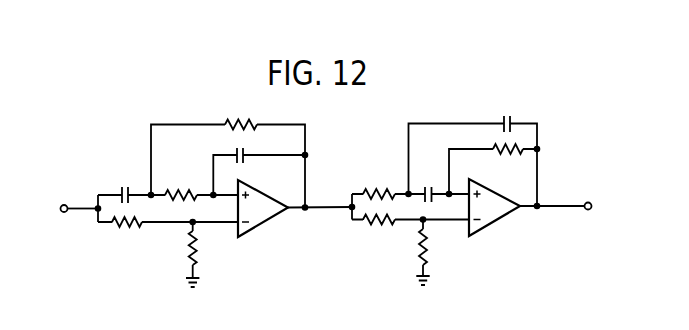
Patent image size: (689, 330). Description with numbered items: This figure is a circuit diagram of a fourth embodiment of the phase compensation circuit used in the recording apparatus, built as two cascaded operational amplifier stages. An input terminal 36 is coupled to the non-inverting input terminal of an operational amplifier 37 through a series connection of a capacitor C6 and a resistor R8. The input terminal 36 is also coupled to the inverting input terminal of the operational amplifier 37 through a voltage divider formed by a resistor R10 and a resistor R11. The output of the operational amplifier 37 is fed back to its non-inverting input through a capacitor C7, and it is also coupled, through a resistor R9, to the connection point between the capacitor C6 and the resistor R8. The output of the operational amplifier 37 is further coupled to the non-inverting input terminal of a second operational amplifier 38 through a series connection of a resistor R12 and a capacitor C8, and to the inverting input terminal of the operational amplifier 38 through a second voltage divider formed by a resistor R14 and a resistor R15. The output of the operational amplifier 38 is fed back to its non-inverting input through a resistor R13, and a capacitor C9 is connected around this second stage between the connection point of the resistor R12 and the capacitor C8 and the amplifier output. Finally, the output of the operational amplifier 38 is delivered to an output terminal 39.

The input terminal 36 is at (64, 204).
The operational amplifier 37 is at (260, 222).
The operational amplifier 38 is at (490, 227).
The output terminal 39 is at (588, 202).
The capacitor C6 is at (124, 183).
The capacitor C7 is at (259, 171).
The capacitor C8 is at (443, 183).
The capacitor C9 is at (473, 149).
The resistor R8 is at (194, 184).
The resistor R9 is at (228, 153).
The resistor R10 is at (168, 235).
The resistor R11 is at (204, 254).
The resistor R12 is at (388, 183).
The resistor R13 is at (493, 169).
The resistor R14 is at (410, 232).
The resistor R15 is at (439, 253).